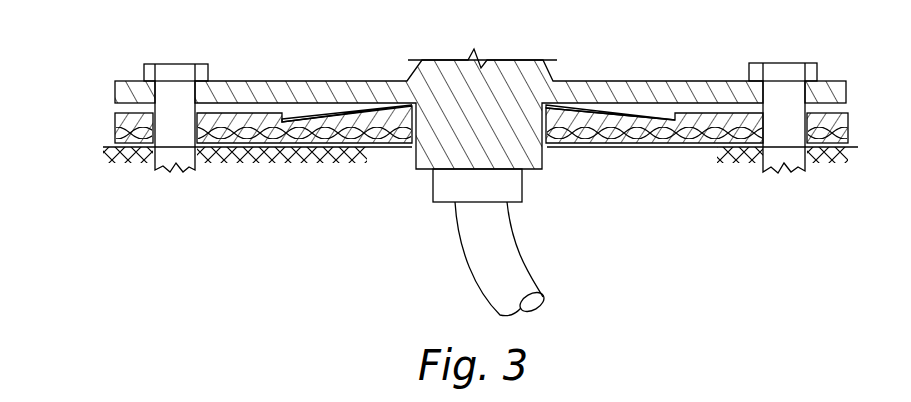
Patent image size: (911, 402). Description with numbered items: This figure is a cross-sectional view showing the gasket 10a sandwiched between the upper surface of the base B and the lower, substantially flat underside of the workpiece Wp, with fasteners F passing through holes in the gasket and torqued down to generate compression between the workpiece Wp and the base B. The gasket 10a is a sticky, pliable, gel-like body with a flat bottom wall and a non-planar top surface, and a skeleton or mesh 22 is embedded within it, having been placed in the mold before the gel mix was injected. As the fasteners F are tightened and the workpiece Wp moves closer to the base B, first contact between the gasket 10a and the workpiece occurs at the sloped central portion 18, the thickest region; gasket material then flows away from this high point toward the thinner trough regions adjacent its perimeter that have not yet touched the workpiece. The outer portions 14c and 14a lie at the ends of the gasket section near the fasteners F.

The workpiece Wp is at (132, 88).
The fasteners F is at (208, 73).
The gasket 10a is at (104, 128).
The sloped central portion 18 is at (628, 117).
The skeleton or mesh 22 is at (226, 140).
The gasket end portion 14c is at (113, 144).
The gasket end portion 14a is at (848, 122).
The base B is at (290, 158).